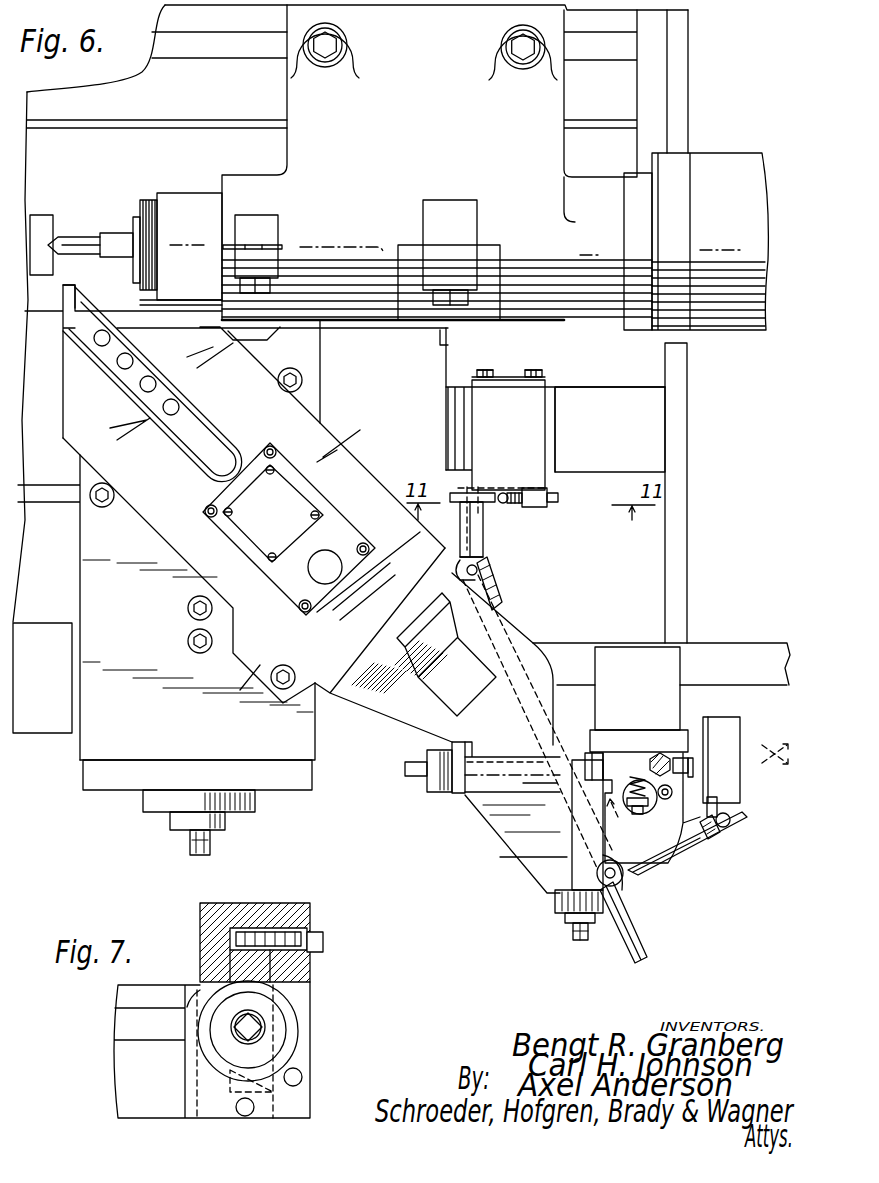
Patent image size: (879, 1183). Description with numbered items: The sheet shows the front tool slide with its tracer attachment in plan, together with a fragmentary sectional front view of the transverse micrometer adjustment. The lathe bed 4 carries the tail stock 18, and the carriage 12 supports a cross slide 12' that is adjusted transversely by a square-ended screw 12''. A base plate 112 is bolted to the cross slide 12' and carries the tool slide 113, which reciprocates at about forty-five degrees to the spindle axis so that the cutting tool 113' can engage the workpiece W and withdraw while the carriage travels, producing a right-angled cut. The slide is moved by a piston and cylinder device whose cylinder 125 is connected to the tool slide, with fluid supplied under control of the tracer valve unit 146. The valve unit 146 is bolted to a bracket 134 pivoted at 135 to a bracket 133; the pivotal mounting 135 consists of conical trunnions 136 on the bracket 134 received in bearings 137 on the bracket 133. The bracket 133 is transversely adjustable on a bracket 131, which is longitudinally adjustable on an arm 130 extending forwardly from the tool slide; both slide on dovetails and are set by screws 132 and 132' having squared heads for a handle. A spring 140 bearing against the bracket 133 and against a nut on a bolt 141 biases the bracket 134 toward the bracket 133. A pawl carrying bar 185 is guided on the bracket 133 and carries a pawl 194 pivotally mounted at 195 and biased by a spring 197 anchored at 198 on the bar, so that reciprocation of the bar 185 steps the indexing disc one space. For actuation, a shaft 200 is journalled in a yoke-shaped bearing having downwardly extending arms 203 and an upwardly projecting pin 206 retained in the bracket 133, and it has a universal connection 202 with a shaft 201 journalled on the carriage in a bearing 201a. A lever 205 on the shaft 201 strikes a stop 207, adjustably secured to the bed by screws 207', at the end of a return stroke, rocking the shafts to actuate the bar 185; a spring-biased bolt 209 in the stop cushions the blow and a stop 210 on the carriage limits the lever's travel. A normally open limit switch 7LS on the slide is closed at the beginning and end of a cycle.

In FIG. 6, the workpiece W is at (45, 225).
In FIG. 6, the tail stock 18 is at (183, 208).
In FIG. 6, the cutting tool 113' is at (99, 293).
In FIG. 6, the tool slide 113 is at (152, 392).
In FIG. 6, the base plate 112 is at (144, 540).
In FIG. 6, the cross slide 12' is at (197, 706).
In FIG. 6, the square-ended screw 12'' is at (185, 825).
In FIG. 6, the carriage 12 is at (254, 517).
In FIG. 6, the stop 210 is at (441, 498).
In FIG. 6, the bed 4 is at (622, 450).
In FIG. 6, the screws 207' is at (511, 358).
In FIG. 6, the bearing 201a is at (485, 510).
In FIG. 6, the stop 207 is at (562, 507).
In FIG. 6, the spring-biased bolt 209 is at (558, 496).
In FIG. 6, the lever 205 is at (490, 500).
In FIG. 6, the shaft 201 is at (483, 546).
In FIG. 6, the clamp 202 is at (500, 585).
In FIG. 6, the arm 130 is at (514, 640).
In FIG. 6, the cylinder 125 is at (458, 703).
In FIG. 6, the screw 132 is at (429, 782).
In FIG. 6, the bracket 131 is at (567, 843).
In FIG. 7, the bracket 131 is at (130, 1031).
In FIG. 6, the bracket 133 is at (600, 804).
In FIG. 7, the bracket 133 is at (303, 912).
In FIG. 6, the screw 132' is at (563, 928).
In FIG. 7, the screw 132' is at (279, 1049).
In FIG. 6, the valve unit 146 is at (672, 663).
In FIG. 6, the bracket 134 is at (648, 730).
In FIG. 6, the pivotal mounting 135 is at (603, 753).
In FIG. 6, the spring 140 is at (628, 777).
In FIG. 6, the bolt 141 is at (651, 808).
In FIG. 6, the bearings 137 is at (670, 755).
In FIG. 6, the conical trunnions 136 is at (675, 763).
In FIG. 6, the limit switch 7LS is at (742, 725).
In FIG. 6, the pivot 195 is at (712, 810).
In FIG. 6, the pawl carrying bar 185 is at (742, 812).
In FIG. 6, the anchor 198 is at (730, 823).
In FIG. 6, the spring 197 is at (715, 832).
In FIG. 6, the pawl 194 is at (670, 847).
In FIG. 6, the upwardly projecting pin 206 is at (617, 882).
In FIG. 6, the downwardly extending arms 203 is at (622, 890).
In FIG. 6, the shaft 200 is at (627, 927).